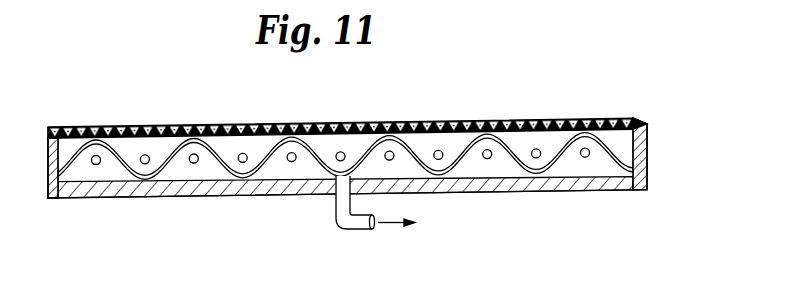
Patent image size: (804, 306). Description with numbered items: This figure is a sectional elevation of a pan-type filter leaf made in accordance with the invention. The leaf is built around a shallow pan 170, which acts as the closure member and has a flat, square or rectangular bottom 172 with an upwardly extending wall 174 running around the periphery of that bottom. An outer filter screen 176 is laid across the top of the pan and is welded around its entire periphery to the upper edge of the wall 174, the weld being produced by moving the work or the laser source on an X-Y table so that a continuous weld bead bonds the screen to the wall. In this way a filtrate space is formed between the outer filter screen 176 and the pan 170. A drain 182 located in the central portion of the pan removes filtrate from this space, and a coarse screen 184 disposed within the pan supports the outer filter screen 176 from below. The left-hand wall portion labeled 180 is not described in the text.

The shallow pan 170 is at (560, 196).
The pan bottom 172 is at (155, 192).
The wall 174 is at (648, 162).
The outer filter screen 176 is at (197, 125).
The left side wall 180 is at (50, 127).
The drain 182 is at (336, 208).
The coarse screen 184 is at (363, 147).